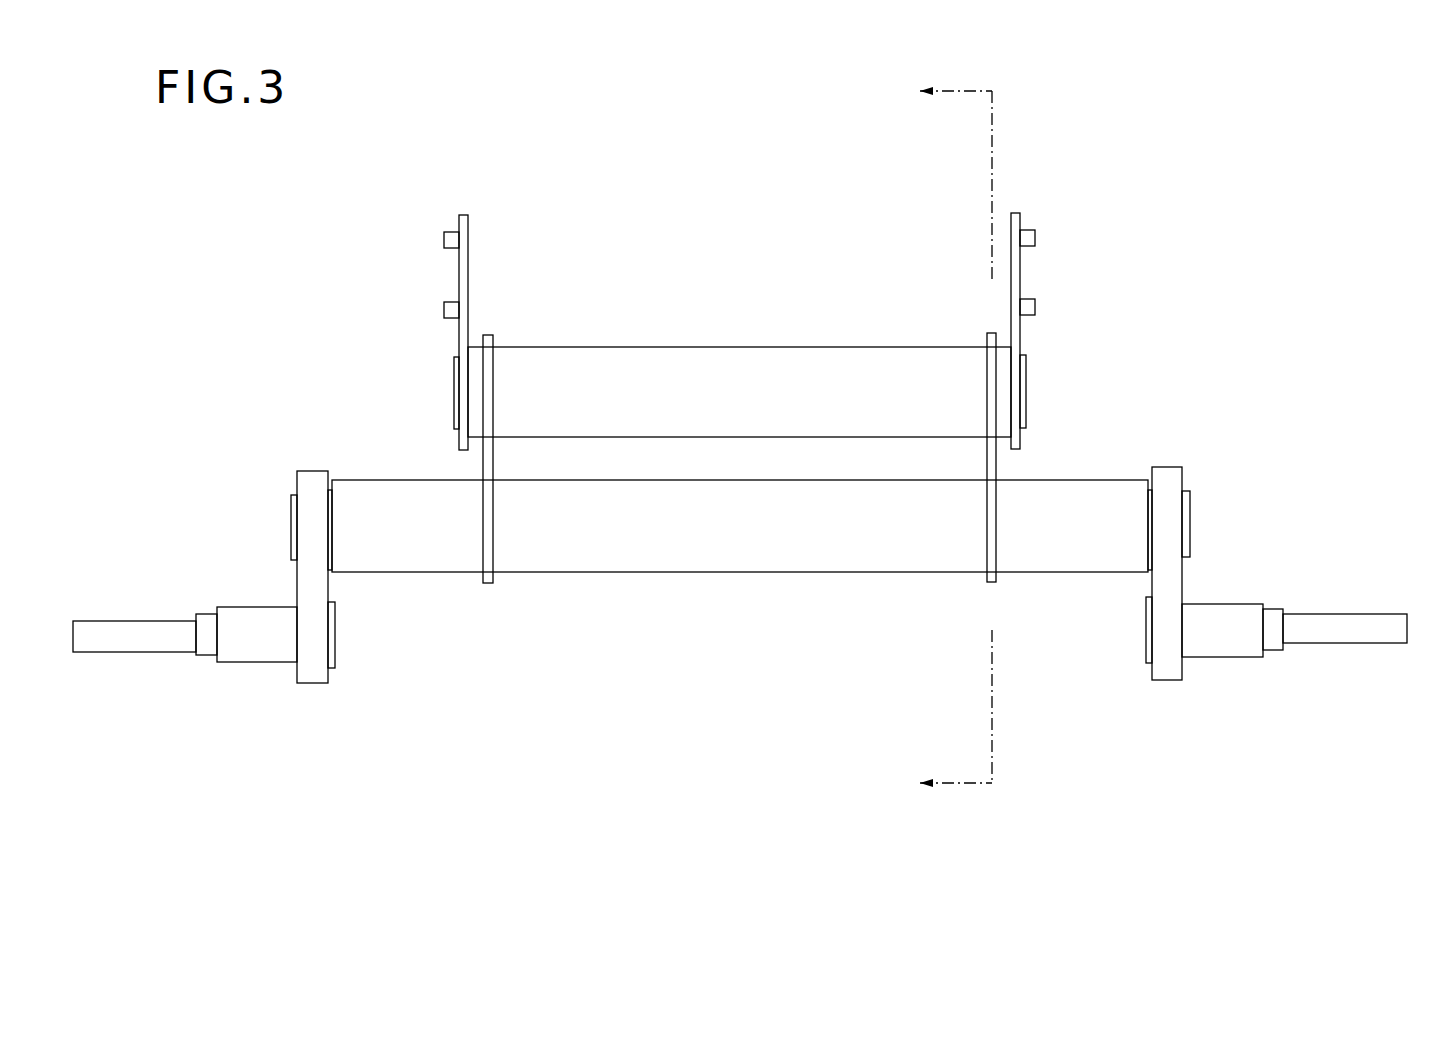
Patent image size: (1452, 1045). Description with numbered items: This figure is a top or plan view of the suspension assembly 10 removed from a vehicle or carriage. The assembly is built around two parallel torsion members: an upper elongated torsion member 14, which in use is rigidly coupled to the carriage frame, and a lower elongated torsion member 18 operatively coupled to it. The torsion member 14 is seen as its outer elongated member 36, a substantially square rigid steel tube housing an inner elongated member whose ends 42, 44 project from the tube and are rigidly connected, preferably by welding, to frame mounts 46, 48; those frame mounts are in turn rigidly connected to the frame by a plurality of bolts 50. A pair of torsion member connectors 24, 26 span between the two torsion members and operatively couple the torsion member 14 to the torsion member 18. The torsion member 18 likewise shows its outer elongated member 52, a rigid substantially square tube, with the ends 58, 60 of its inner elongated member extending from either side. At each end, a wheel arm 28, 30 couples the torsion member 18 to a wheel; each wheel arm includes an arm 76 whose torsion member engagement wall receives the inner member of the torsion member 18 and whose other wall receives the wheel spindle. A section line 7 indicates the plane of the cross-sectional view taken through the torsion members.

The section line 7- 7 is at (944, 440).
The suspension assembly 10 is at (600, 192).
The elongated torsion member 14 is at (739, 337).
The elongated torsion member 18 is at (740, 594).
The torsion member connector 24 is at (979, 458).
The torsion member connector 26 is at (502, 461).
The wheel arm 28 is at (1193, 582).
The wheel arm 30 is at (289, 585).
The outer elongated member 36 is at (913, 357).
The end 42 is at (1026, 388).
The end 44 is at (454, 388).
The frame mount 46 is at (1027, 270).
The frame mount 48 is at (452, 272).
The bolt 50 is at (444, 237).
The outer elongated member 52 is at (775, 532).
The end 58 is at (1190, 522).
The end 60 is at (291, 525).
The arm 76 is at (332, 587).